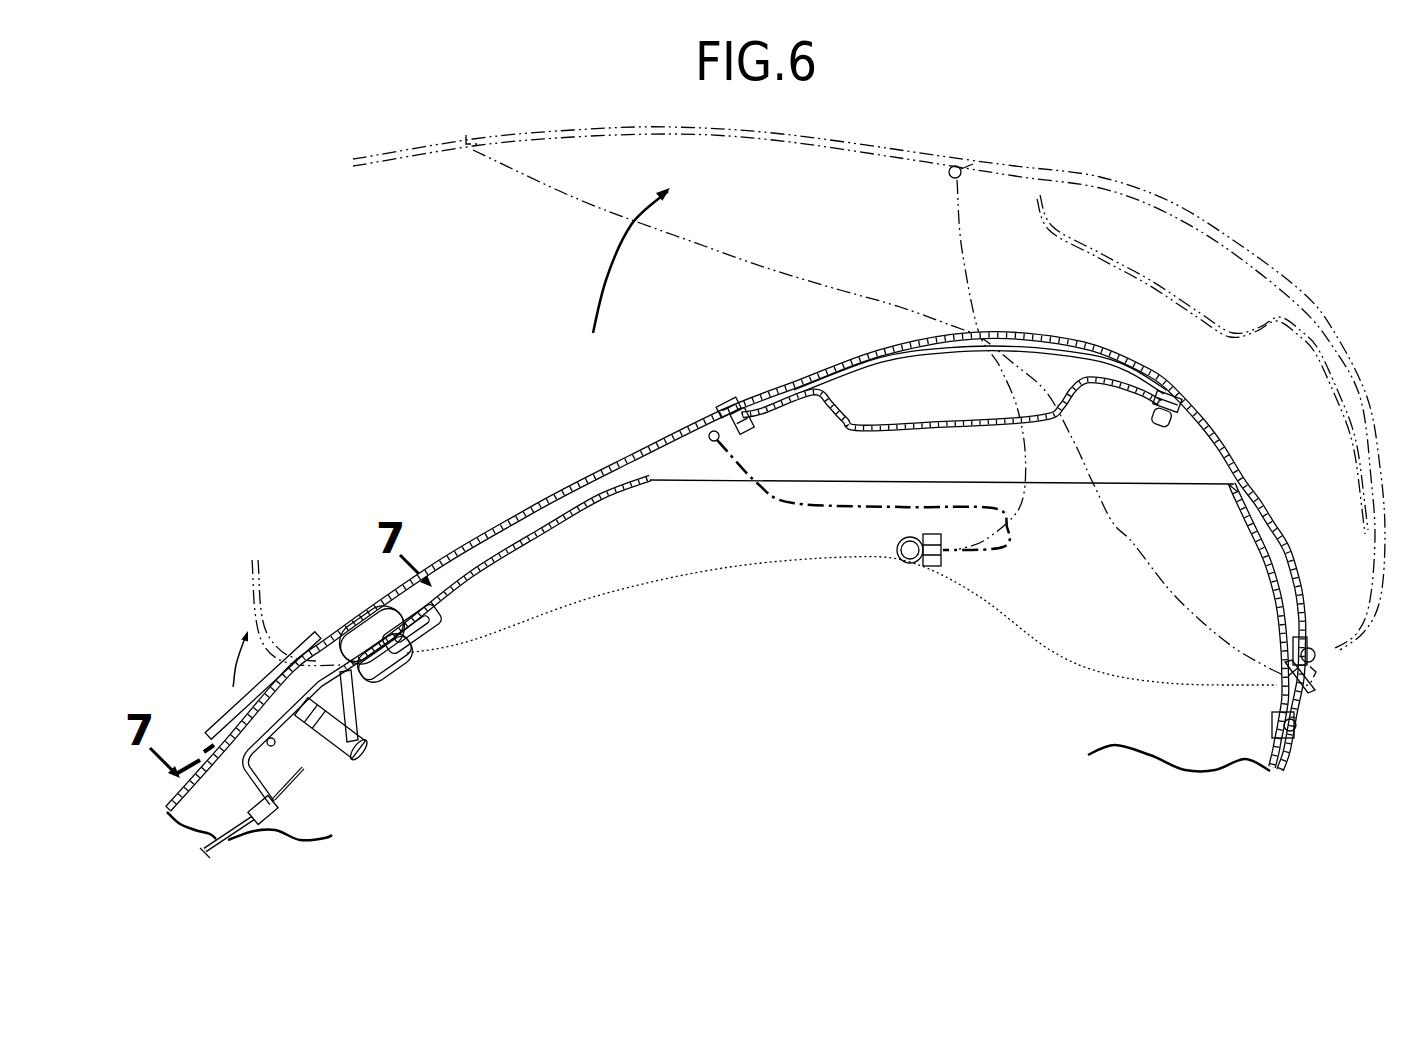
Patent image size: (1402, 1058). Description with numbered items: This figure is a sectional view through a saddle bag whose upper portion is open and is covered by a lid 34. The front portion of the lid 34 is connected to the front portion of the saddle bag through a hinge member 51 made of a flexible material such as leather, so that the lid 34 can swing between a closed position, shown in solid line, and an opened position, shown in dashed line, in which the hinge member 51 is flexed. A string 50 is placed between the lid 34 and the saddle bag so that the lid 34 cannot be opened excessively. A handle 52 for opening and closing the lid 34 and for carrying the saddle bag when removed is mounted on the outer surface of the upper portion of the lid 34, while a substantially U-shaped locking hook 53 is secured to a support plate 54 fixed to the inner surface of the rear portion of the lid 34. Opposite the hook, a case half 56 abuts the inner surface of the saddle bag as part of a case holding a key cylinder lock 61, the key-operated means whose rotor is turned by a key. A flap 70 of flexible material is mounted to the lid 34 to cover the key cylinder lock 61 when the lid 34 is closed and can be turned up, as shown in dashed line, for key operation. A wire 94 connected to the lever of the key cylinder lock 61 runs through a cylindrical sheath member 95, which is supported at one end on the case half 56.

The lid 34 is at (577, 483).
The handle 52 is at (877, 354).
The string 50 is at (792, 503).
The hinge member 51 is at (1297, 700).
The locking hook 53 is at (388, 677).
The support plate 54 is at (377, 607).
The case half 56 is at (443, 630).
The key cylinder lock 61 is at (283, 752).
The flap 70 is at (223, 720).
The wire 94 is at (330, 767).
The sheath member 95 is at (232, 838).